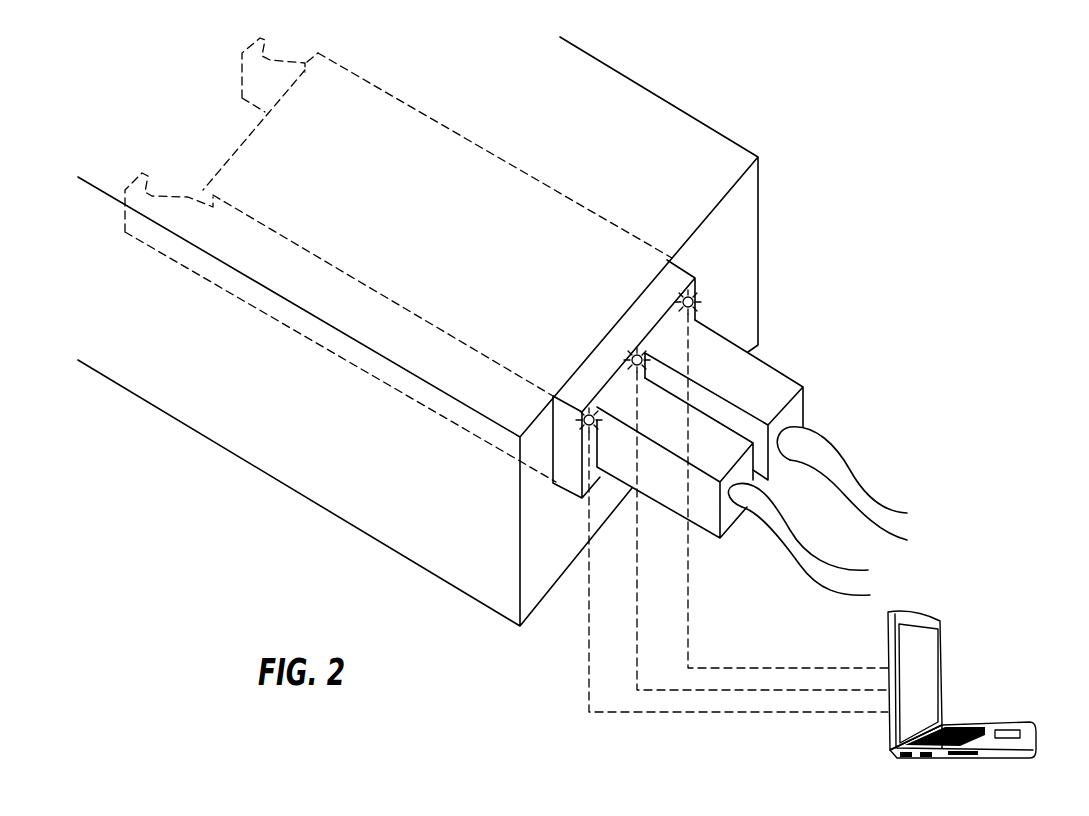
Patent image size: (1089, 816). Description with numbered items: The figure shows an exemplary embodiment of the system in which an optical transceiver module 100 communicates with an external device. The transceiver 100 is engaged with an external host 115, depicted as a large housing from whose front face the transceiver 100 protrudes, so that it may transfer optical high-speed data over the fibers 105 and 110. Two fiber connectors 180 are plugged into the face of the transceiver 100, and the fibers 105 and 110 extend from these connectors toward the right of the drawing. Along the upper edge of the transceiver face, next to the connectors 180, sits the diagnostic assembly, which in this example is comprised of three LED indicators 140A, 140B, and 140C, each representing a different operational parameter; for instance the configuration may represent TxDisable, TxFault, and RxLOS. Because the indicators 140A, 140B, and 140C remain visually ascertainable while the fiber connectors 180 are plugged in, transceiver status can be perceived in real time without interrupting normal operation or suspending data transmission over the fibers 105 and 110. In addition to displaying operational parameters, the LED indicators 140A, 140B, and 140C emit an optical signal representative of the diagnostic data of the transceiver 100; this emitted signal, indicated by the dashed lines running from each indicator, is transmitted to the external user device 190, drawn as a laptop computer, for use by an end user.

The optical transceiver module 100 is at (712, 310).
The optical fiber 105 is at (835, 466).
The optical fiber 110 is at (833, 575).
The external host 115 is at (770, 230).
The LED indicator 140A is at (581, 394).
The LED indicator 140B is at (662, 284).
The LED indicator 140C is at (617, 338).
The fiber connectors 180 is at (708, 421).
The external user device 190 is at (917, 604).